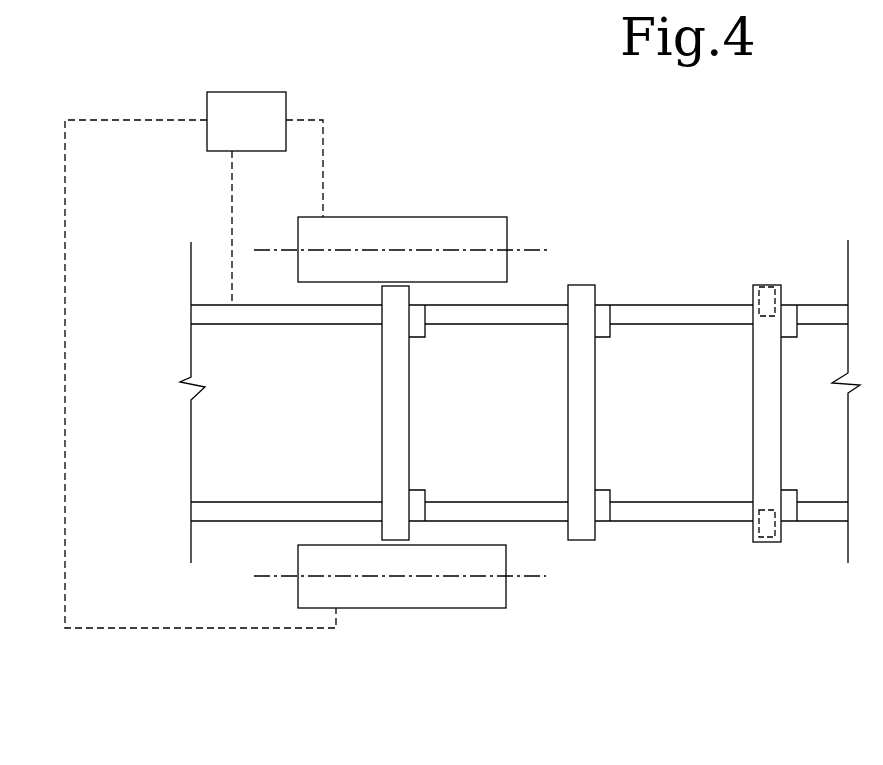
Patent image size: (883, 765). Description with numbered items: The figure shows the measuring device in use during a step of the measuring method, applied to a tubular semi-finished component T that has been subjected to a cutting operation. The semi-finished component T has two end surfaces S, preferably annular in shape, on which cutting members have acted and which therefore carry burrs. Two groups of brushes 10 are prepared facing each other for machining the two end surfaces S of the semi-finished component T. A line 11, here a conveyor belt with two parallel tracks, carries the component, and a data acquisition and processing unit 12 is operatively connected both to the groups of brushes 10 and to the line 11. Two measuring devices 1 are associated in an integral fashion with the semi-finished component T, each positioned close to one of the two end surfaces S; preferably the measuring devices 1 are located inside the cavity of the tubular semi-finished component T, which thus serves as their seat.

The data acquisition and processing unit 12 is at (259, 134).
The group of brushes 10 is at (425, 215).
The line 11 is at (670, 303).
The surface to be machined S is at (586, 281).
The measuring device 1 is at (767, 284).
The semi-finished component T is at (759, 395).